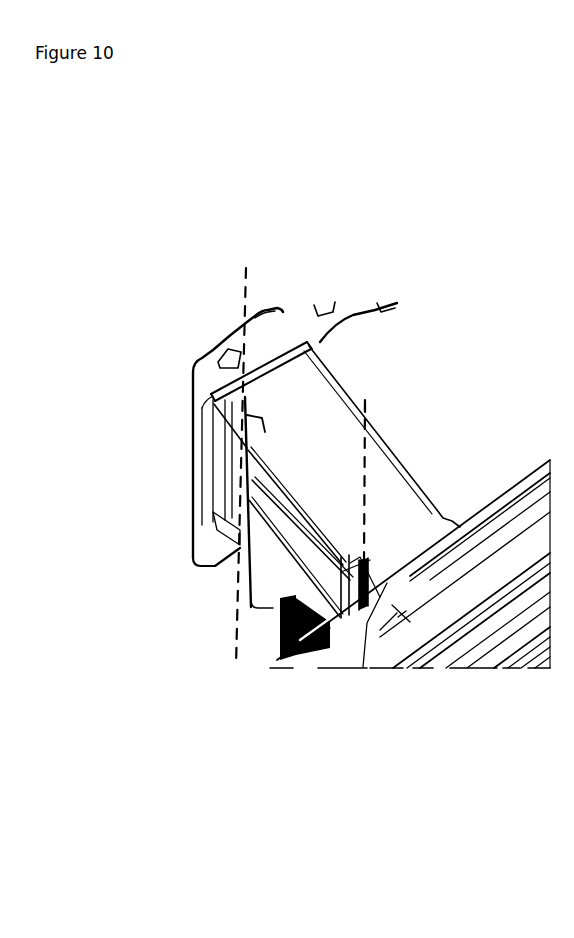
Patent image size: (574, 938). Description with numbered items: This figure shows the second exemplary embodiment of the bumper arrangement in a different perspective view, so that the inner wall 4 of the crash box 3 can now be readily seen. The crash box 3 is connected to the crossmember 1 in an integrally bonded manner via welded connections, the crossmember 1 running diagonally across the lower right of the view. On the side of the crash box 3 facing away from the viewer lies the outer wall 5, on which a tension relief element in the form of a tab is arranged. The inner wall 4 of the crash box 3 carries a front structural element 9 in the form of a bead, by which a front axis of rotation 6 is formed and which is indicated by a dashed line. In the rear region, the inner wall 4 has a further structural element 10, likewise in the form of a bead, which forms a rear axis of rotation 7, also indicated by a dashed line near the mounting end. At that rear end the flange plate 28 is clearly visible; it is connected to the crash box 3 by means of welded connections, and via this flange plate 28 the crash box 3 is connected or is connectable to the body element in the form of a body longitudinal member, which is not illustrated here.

The crossmember 1 is at (483, 580).
The crash box 3 is at (317, 445).
The inner wall 4 is at (278, 513).
The outer wall 5 is at (412, 472).
The front axis of rotation 6 is at (367, 458).
The rear axis of rotation 7 is at (242, 301).
The front structural element 9 is at (355, 573).
The further structural element 10 is at (242, 446).
The flange plate 28 is at (259, 343).